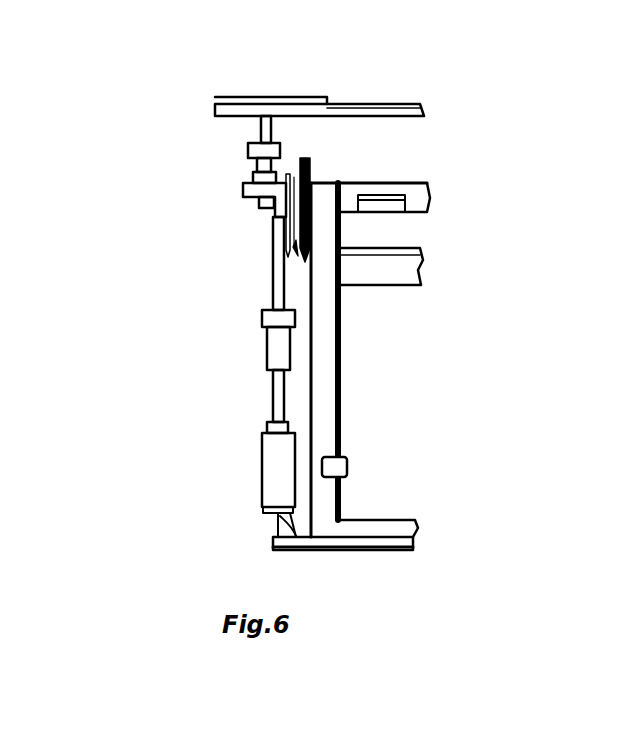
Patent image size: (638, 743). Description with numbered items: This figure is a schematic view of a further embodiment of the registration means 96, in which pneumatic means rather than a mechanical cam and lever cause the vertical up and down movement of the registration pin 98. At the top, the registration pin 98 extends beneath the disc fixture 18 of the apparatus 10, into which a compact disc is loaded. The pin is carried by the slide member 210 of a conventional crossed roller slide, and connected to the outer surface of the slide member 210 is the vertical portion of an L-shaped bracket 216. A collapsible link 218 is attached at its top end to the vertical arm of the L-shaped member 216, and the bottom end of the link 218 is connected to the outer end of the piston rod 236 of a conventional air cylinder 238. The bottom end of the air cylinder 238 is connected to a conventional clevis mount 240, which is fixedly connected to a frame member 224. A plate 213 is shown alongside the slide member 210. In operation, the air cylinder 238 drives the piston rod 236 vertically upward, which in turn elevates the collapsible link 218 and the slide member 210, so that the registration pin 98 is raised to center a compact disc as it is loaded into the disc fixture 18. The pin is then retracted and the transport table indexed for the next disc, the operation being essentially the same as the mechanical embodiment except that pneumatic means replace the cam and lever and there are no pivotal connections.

The apparatus plate 10 is at (383, 104).
The disc fixture 18 is at (272, 97).
The registration means 96 is at (230, 149).
The registration pin 98 is at (272, 131).
The blade plate 213 is at (312, 164).
The L-shaped bracket 216 is at (243, 190).
The collapsible link 218 is at (258, 207).
The slide member 210 is at (305, 262).
The piston rod 236 is at (266, 426).
The air cylinder 238 is at (262, 472).
The clevis mount 240 is at (278, 522).
The frame member 224 is at (386, 550).